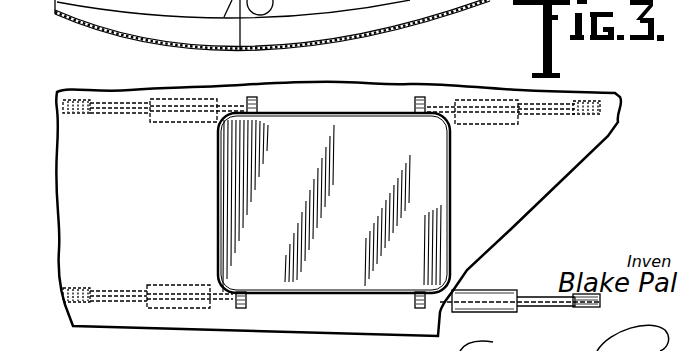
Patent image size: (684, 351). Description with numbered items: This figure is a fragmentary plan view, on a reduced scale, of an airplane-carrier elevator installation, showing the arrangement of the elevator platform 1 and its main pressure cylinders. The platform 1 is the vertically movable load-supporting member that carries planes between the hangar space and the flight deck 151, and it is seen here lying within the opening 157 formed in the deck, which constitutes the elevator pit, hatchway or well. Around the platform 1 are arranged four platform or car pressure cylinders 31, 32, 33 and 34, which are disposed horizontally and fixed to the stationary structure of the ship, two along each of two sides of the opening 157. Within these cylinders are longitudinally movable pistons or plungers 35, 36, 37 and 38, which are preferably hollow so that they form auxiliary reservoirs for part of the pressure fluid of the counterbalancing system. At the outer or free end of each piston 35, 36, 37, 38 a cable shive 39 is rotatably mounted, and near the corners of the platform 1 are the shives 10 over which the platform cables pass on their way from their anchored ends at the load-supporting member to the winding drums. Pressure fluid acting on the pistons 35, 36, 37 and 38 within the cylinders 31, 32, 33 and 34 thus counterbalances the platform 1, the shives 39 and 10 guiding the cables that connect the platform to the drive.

The elevator platform 1 is at (427, 187).
The cable shive 10 is at (248, 96).
The pressure cylinder 31 is at (170, 292).
The pressure cylinder 32 is at (487, 304).
The pressure cylinder 33 is at (172, 98).
The pressure cylinder 34 is at (480, 98).
The piston 35 is at (133, 286).
The piston 36 is at (528, 297).
The piston 37 is at (113, 98).
The piston 38 is at (558, 101).
The cable shive 39 is at (68, 98).
The flight deck 151 is at (568, 158).
The deck opening 157 is at (210, 189).